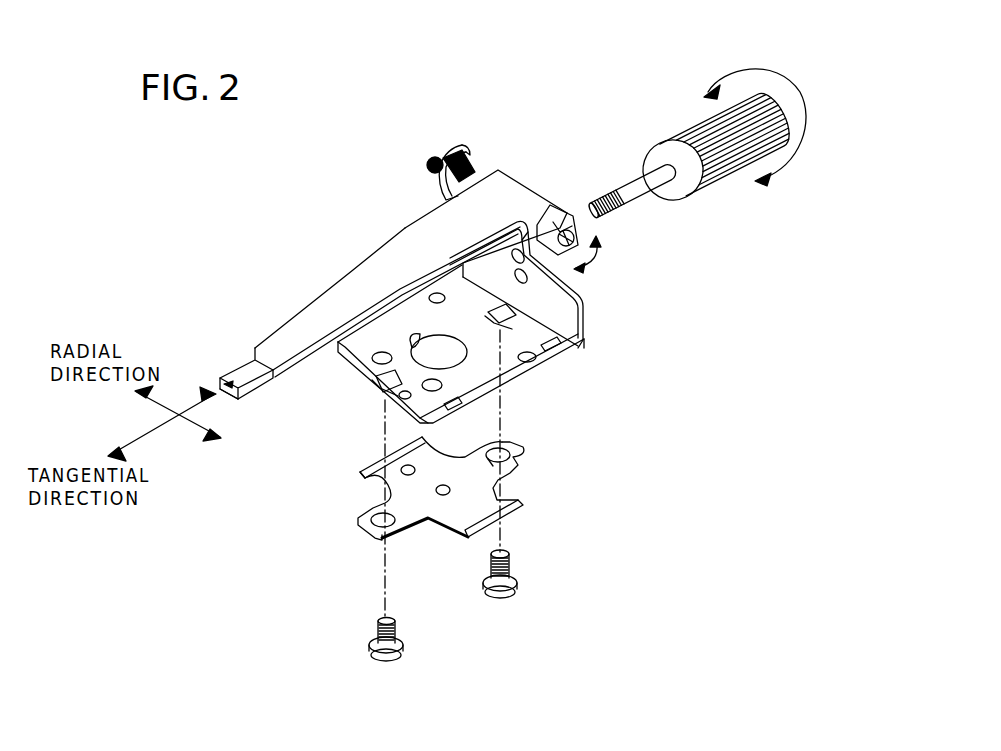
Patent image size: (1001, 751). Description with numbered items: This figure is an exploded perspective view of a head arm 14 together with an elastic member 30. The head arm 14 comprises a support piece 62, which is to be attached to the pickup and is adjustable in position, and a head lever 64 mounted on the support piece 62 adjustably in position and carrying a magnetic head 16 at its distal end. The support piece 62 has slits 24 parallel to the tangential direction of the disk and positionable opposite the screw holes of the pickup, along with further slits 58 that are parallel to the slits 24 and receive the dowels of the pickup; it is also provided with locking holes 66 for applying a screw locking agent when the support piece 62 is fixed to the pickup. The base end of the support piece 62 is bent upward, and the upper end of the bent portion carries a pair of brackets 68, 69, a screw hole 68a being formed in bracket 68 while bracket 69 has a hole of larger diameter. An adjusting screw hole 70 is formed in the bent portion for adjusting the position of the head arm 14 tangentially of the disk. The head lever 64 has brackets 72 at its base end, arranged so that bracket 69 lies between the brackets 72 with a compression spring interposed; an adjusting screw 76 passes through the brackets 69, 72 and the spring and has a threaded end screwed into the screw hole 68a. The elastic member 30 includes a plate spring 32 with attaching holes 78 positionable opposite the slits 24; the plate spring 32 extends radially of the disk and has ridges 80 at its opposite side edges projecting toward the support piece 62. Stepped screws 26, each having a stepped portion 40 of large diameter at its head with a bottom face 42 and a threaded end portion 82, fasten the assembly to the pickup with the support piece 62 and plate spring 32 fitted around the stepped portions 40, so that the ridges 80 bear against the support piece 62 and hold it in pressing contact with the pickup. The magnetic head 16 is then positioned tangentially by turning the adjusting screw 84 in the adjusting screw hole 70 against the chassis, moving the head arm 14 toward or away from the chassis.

The head arm 14 is at (701, 209).
The magnetic head 16 is at (244, 400).
The slits 24 is at (380, 387).
The stepped screws 26 is at (487, 634).
The elastic member 30 is at (496, 515).
The plate spring 32 is at (507, 488).
The stepped portion 40 is at (511, 588).
The bottom face 42 is at (483, 578).
The slits 58 is at (583, 335).
The support piece 62 is at (462, 288).
The head lever 64 is at (430, 238).
The locking holes 66 is at (440, 300).
The bracket 68 is at (465, 148).
The screw hole 68a is at (446, 153).
The bracket 69 is at (590, 282).
The adjusting screw hole 70 is at (545, 303).
The brackets 72 is at (492, 170).
The adjusting screw 76 is at (589, 192).
The attaching holes 78 is at (520, 455).
The ridges 80 is at (500, 507).
The threaded end portion 82 is at (513, 563).
The adjusting screw 84 is at (726, 163).